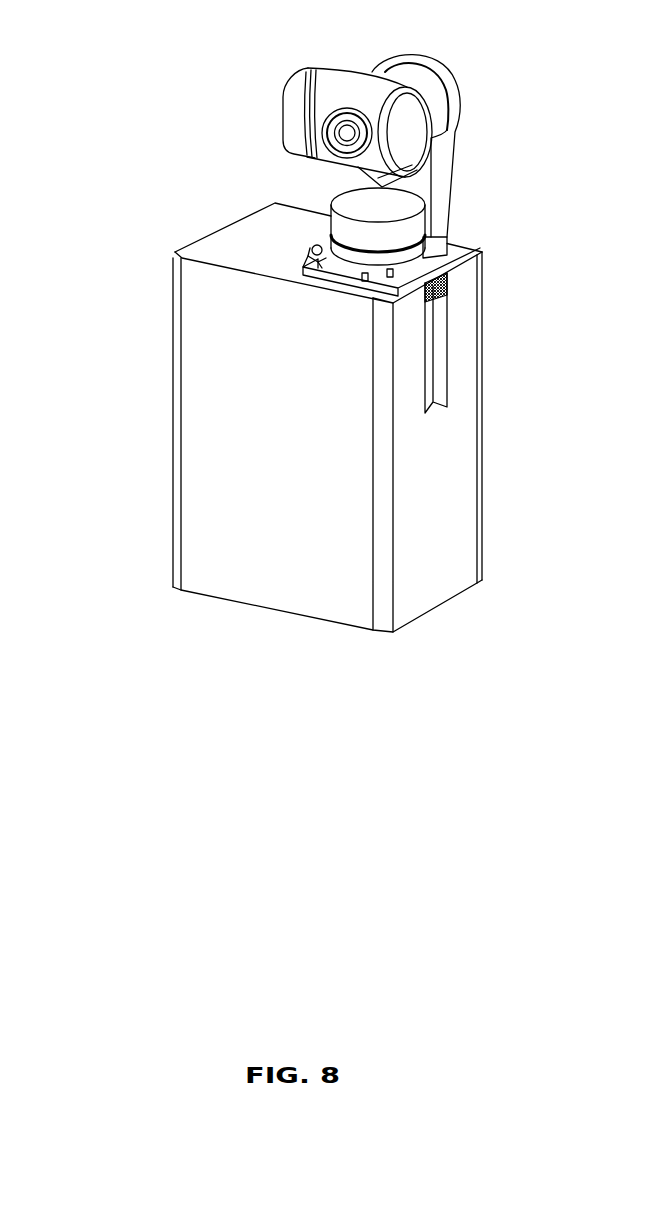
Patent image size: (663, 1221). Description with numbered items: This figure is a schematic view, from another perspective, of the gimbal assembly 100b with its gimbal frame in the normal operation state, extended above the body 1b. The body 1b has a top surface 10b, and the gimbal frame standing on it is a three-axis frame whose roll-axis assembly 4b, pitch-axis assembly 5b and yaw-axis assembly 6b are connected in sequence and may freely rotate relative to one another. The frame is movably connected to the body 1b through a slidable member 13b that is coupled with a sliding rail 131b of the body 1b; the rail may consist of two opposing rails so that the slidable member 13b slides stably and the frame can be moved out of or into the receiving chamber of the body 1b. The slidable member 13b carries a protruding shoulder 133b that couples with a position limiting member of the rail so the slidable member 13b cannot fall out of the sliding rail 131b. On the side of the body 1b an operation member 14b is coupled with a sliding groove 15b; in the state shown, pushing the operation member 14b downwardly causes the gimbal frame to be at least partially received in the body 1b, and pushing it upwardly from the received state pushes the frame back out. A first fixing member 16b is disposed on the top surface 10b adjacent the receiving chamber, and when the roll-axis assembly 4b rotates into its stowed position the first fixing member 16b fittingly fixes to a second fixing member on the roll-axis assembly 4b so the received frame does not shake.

The gimbal assembly 100b is at (208, 48).
The body 1b is at (450, 500).
The top surface 10b is at (228, 243).
The roll-axis assembly 4b is at (288, 110).
The pitch-axis assembly 5b is at (450, 102).
The yaw-axis assembly 6b is at (407, 228).
The sliding rail 131b is at (412, 257).
The slidable member 13b is at (343, 266).
The protruding shoulder 133b is at (316, 258).
The operation member 14b is at (447, 290).
The sliding groove 15b is at (437, 375).
The first fixing member 16b is at (318, 246).